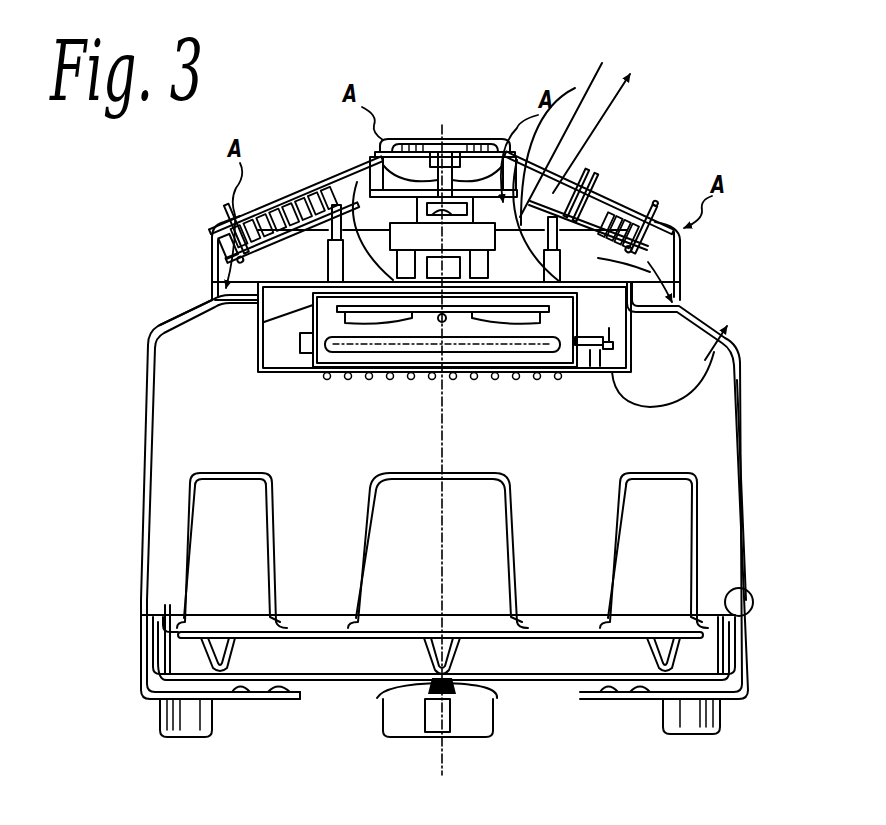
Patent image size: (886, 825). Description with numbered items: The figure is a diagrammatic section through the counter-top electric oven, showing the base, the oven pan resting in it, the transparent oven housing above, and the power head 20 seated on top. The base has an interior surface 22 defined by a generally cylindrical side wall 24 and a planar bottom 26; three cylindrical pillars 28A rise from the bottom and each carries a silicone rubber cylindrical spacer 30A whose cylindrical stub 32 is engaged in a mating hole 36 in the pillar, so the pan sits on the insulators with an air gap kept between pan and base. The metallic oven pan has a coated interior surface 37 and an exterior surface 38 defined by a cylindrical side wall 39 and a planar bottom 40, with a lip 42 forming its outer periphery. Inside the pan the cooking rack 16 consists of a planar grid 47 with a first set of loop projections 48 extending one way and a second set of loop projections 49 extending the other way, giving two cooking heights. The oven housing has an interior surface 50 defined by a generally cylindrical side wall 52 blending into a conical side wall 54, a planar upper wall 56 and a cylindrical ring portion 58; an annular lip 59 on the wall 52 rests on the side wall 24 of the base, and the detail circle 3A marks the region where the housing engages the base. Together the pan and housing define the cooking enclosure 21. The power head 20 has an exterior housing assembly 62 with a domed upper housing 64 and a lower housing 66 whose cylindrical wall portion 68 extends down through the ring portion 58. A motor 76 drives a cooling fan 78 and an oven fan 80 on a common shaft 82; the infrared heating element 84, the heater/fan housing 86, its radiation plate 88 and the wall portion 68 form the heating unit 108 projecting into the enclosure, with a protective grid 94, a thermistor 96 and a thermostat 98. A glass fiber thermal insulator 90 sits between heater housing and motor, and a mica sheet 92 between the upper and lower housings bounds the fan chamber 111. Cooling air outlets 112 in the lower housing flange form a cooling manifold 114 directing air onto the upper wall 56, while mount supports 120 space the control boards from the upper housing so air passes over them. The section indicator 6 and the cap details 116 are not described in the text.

The section line 6 is at (650, 204).
The cooking rack 16 is at (661, 472).
The power head 20 is at (452, 138).
The cooking enclosure 21 is at (746, 444).
The interior surface 22 is at (745, 678).
The cylindrical side wall 24 is at (748, 640).
The planar bottom 26 is at (568, 699).
The cylindrical pillars 28A is at (237, 692).
The cylindrical spacers 30A is at (284, 699).
The cylindrical stub 32 is at (508, 700).
The mating hole 36 is at (483, 737).
The interior surface 37 is at (176, 645).
The exterior surface 38 is at (143, 700).
The cylindrical side wall 39 is at (148, 658).
The planar bottom 40 is at (317, 692).
The lip 42 is at (150, 621).
The planar grid 47 is at (313, 630).
The first set of loop projections 48 is at (232, 658).
The second set of loop projections 49 is at (271, 517).
The interior surface 50 is at (156, 433).
The generally cylindrical side wall 52 is at (147, 432).
The generally conical shaped side wall 54 is at (174, 336).
The planar upper wall 56 is at (203, 306).
The generally cylindrical ring portion 58 is at (205, 300).
The annular lip 59 is at (141, 586).
The exterior housing assembly 62 is at (690, 242).
The domed shape upper housing 64 is at (600, 205).
The lower housing 66 is at (612, 339).
The generally cylindrical wall portion 68 is at (618, 370).
The motor 76 is at (360, 195).
The cooling fan 78 is at (555, 140).
The oven fan 80 is at (549, 335).
The common shaft 82 is at (300, 190).
The infrared electric heating element 84 is at (553, 320).
The heater/fan housing 86 is at (605, 327).
The radiation plate 88 is at (652, 297).
The glass fiber thermal insulator 90 is at (293, 290).
The mica sheet 92 is at (572, 125).
The protective grid 94 is at (393, 379).
The thermistor 96 is at (346, 296).
The thermostat 98 is at (300, 350).
The heating unit 108 is at (311, 383).
The fan chamber 111 is at (590, 192).
The cooling air outlets 112 is at (205, 275).
The cooling manifold 114 is at (680, 312).
The cap 116 is at (402, 139).
The mount supports 120 is at (236, 232).
The detail circle 3A is at (740, 582).